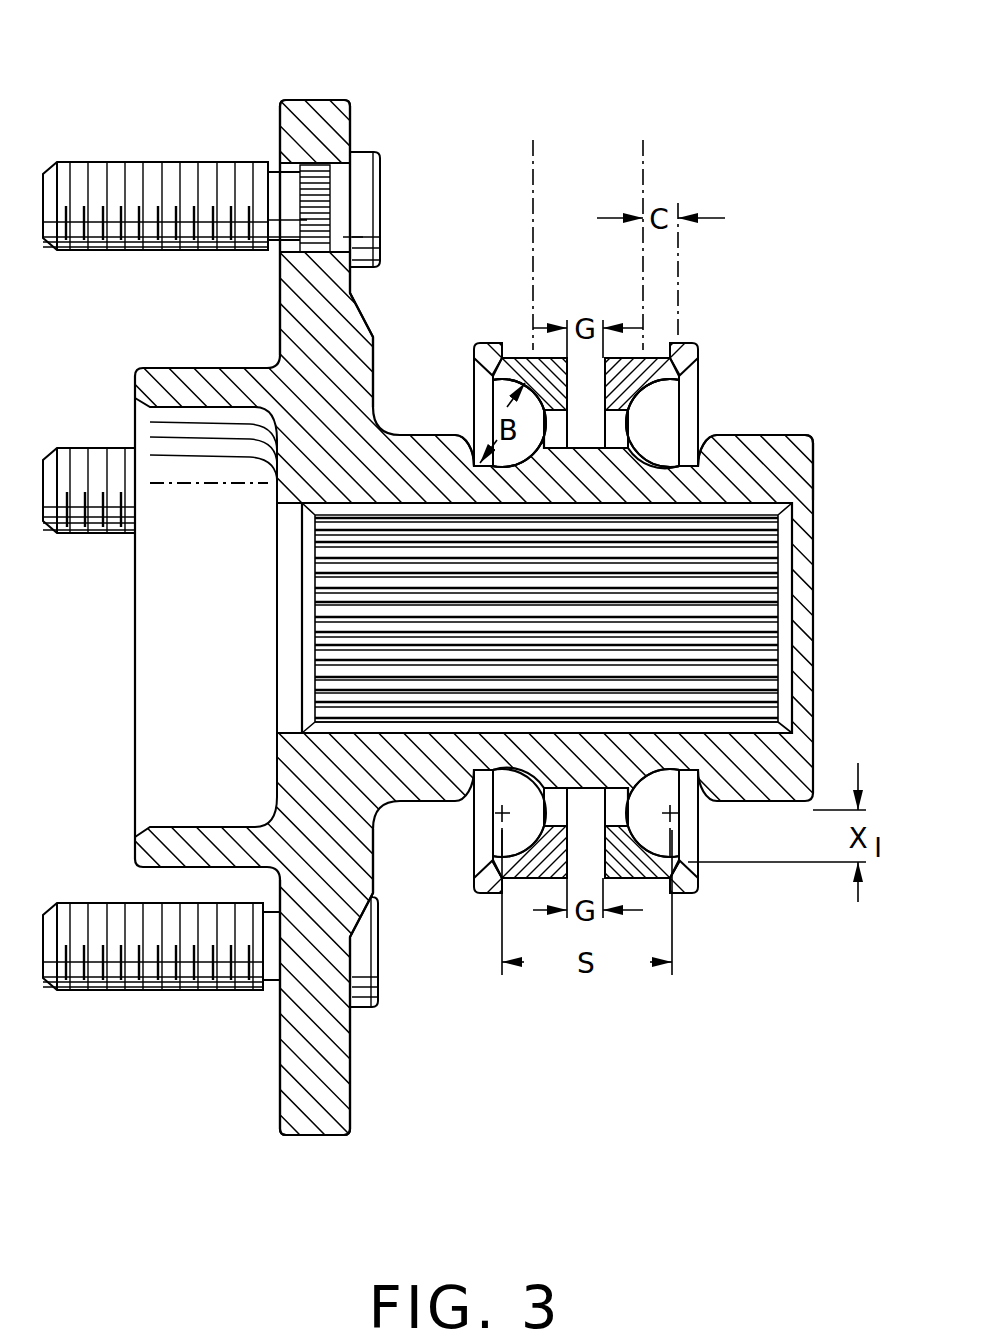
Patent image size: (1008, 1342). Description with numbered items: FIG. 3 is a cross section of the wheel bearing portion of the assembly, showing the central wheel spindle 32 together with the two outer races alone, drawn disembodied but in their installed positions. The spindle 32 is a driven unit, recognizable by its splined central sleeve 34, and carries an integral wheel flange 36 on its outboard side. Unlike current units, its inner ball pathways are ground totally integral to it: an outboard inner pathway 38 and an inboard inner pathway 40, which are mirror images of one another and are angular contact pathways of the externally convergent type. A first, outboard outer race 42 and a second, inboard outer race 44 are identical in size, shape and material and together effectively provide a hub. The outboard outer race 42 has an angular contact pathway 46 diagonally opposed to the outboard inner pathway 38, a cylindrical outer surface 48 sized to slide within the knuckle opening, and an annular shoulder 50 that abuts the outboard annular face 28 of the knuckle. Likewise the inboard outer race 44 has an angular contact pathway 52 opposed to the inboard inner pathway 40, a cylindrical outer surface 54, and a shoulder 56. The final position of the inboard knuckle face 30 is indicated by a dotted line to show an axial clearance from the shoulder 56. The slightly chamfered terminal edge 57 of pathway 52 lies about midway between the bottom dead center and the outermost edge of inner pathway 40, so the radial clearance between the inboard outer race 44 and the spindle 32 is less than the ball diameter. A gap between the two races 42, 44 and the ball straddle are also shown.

The outboard annular face 28 is at (533, 200).
The inboard annular face 30 is at (643, 165).
The wheel spindle 32 is at (173, 362).
The splined central sleeve 34 is at (762, 569).
The wheel flange 36 is at (320, 125).
The outboard inner pathway 38 is at (463, 437).
The inboard inner pathway 40 is at (690, 450).
The outboard outer race 42 is at (467, 887).
The inboard outer race 44 is at (697, 885).
The angular contact pathway 46 is at (500, 390).
The outer surface 48 is at (517, 352).
The annular shoulder 50 is at (482, 887).
The angular contact pathway 52 is at (667, 400).
The cylindrical outer surface 54 is at (655, 355).
The shoulder 56 is at (683, 897).
The terminal edge 57 is at (693, 380).